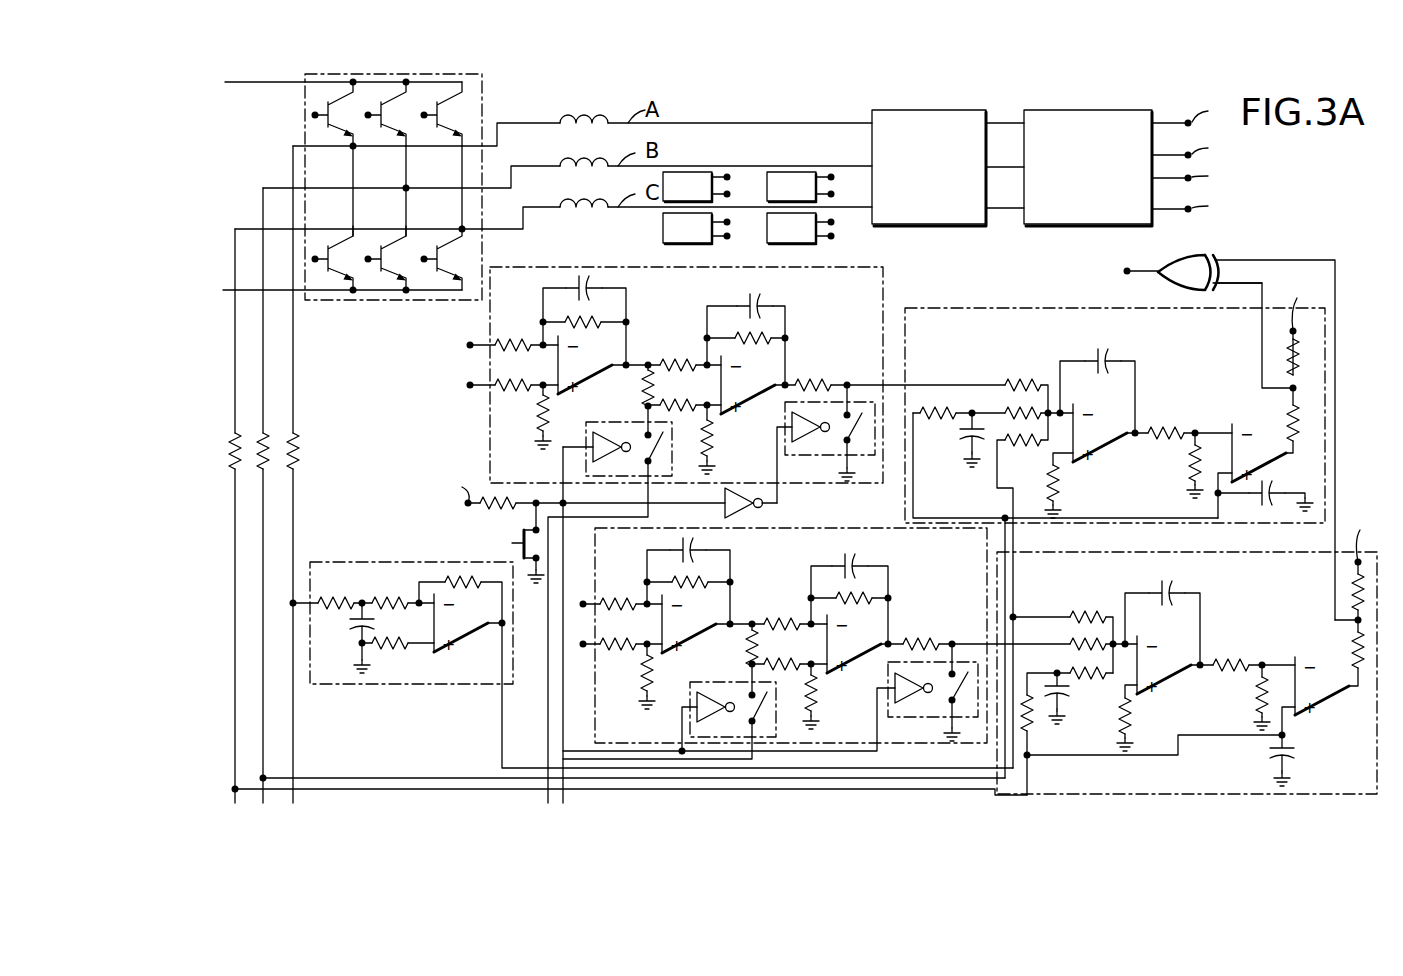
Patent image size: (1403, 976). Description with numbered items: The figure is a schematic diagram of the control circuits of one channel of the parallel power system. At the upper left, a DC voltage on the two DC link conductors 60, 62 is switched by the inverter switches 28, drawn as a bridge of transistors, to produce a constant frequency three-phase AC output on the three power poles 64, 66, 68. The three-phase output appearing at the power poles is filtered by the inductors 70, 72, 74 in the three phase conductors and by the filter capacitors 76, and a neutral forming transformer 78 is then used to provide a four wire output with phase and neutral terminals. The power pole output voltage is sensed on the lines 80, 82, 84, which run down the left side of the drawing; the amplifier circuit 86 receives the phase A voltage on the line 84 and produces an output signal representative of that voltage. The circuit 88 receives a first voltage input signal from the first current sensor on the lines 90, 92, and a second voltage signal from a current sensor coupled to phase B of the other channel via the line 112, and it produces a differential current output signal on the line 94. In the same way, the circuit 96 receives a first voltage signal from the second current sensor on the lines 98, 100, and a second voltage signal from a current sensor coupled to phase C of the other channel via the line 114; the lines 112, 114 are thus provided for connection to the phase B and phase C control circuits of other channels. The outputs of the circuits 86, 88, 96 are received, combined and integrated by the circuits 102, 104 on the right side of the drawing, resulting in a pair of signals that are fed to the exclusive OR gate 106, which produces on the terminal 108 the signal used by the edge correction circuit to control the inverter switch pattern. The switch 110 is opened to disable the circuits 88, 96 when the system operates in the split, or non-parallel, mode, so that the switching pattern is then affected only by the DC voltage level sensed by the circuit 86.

The inverter switches 28 is at (482, 100).
The DC link conductor 60 is at (240, 83).
The DC link conductor 62 is at (232, 290).
The power pole 64 is at (352, 148).
The power pole 66 is at (406, 190).
The power pole 68 is at (462, 229).
The inductor 70 is at (602, 113).
The inductor 72 is at (588, 158).
The inductor 74 is at (582, 200).
The filter capacitors 76 is at (905, 110).
The neutral forming transformer 78 is at (1067, 110).
The line 80 is at (233, 743).
The line 82 is at (260, 728).
The line 84 is at (293, 753).
The amplifier circuit 86 is at (383, 562).
The circuit 88 is at (515, 265).
The line 90 is at (730, 176).
The line 92 is at (730, 194).
The line 94 is at (893, 385).
The circuit 96 is at (793, 527).
The line 98 is at (730, 222).
The line 100 is at (730, 236).
The circuit 102 is at (1053, 308).
The circuit 104 is at (1077, 551).
The exclusive OR gate 106 is at (1193, 253).
The terminal 108 is at (1125, 270).
The switch 110 is at (512, 543).
The line 112 is at (546, 760).
The line 114 is at (505, 795).